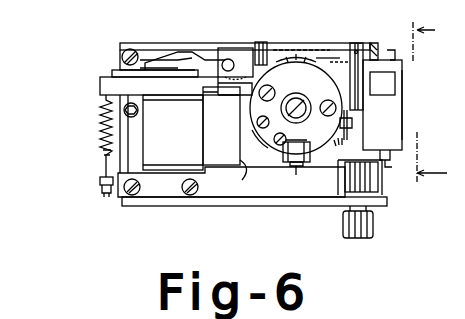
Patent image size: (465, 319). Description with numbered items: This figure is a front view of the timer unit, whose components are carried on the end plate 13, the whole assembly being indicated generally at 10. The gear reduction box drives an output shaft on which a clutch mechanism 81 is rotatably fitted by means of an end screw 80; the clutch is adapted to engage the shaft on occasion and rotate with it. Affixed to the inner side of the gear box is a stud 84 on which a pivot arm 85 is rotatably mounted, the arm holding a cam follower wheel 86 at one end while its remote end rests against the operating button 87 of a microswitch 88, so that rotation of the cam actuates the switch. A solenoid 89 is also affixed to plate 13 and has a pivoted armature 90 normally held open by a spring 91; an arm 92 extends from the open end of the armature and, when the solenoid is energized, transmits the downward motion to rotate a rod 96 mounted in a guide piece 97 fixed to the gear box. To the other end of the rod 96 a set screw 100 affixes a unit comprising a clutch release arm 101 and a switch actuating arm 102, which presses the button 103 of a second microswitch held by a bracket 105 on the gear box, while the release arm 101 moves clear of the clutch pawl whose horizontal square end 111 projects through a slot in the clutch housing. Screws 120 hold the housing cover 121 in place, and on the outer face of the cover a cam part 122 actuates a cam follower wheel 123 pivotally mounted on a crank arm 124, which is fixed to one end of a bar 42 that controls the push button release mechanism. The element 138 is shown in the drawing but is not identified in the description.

The section line 10 is at (437, 102).
The end plate 13 is at (388, 199).
The bar 42 is at (374, 224).
The end screw 80 is at (294, 101).
The clutch mechanism 81 is at (340, 71).
The stud 84 is at (228, 58).
The pivot arm 85 is at (195, 44).
The cam follower wheel 86 is at (323, 48).
The operating button 87 is at (118, 66).
The microswitch 88 is at (106, 73).
The solenoid 89 is at (231, 178).
The pivoted armature 90 is at (176, 90).
The spring 91 is at (103, 116).
The arm 92 is at (221, 126).
The rod 96 is at (243, 47).
The guide piece 97 is at (300, 53).
The set screw 100 is at (360, 43).
The clutch release arm 101 is at (352, 130).
The switch actuating arm 102 is at (385, 82).
The button 103 is at (390, 115).
The bracket 105 is at (407, 82).
The horizontal square end 111 is at (340, 147).
The screws 120 is at (271, 89).
The housing cover 121 is at (303, 170).
The cam part 122 is at (255, 138).
The cam follower wheel 123 is at (283, 156).
The crank arm 124 is at (332, 170).
The ribbed cylinder 138 is at (262, 42).